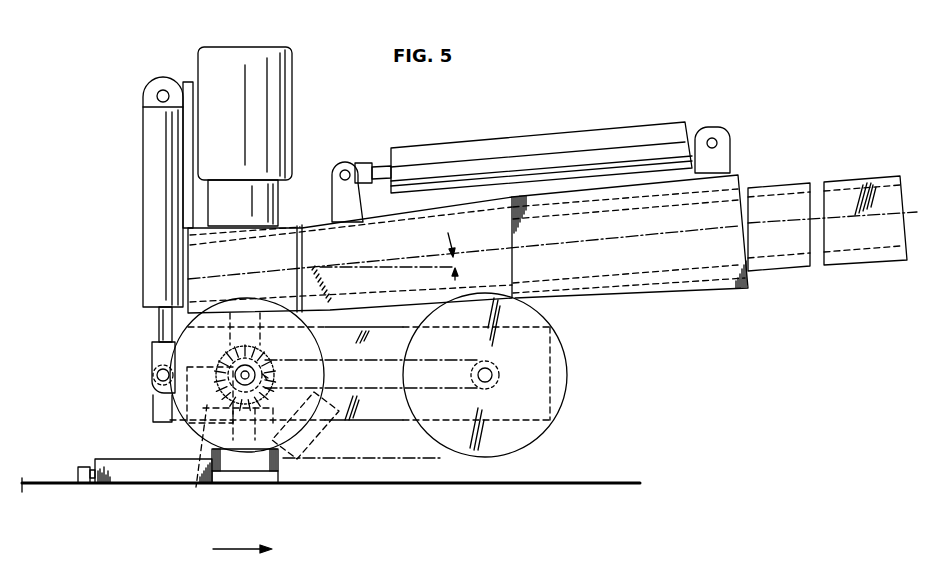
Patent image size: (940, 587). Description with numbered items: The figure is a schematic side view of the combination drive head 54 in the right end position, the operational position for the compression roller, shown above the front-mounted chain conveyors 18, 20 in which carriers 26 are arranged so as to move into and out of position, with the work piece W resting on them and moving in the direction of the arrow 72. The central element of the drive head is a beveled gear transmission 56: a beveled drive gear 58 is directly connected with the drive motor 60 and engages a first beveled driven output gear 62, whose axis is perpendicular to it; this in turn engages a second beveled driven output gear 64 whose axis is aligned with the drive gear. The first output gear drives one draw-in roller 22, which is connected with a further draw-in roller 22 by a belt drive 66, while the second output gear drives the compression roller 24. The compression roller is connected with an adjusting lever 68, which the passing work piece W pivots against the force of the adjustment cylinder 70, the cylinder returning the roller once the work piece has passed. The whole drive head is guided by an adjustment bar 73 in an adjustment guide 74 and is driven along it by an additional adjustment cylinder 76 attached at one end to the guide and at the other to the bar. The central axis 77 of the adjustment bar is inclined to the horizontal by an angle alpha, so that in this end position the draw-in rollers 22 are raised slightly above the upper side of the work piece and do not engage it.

The combination drive head 54 is at (118, 160).
The drive motor 60 is at (282, 94).
The adjustment cylinder 70 is at (152, 225).
The beveled drive gear 58 is at (160, 330).
The first beveled driven output gear 62 is at (153, 360).
The beveled gear transmission 56 is at (168, 428).
The second beveled driven output gear 64 is at (166, 404).
The adjustment bar 73 is at (318, 247).
The adjustment guide 74 is at (706, 283).
The central axis 77 is at (755, 226).
The additional adjustment cylinder 76 is at (505, 148).
The draw-in rollers 22 is at (230, 437).
The belt drive 66 is at (375, 392).
The compression roller 24 is at (270, 472).
The adjusting lever 68 is at (198, 487).
The work piece W is at (142, 475).
The carriers 26 is at (76, 472).
The chain conveyor 18 is at (331, 499).
The chain conveyor 20 is at (498, 486).
The arrow 72 is at (232, 549).